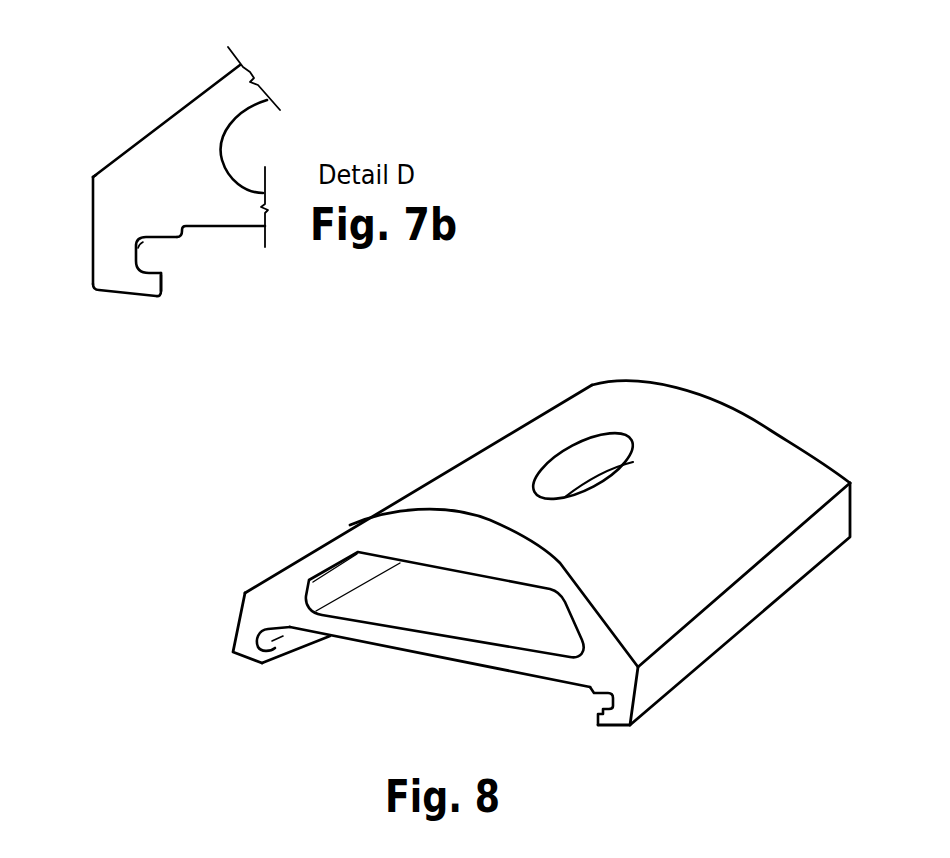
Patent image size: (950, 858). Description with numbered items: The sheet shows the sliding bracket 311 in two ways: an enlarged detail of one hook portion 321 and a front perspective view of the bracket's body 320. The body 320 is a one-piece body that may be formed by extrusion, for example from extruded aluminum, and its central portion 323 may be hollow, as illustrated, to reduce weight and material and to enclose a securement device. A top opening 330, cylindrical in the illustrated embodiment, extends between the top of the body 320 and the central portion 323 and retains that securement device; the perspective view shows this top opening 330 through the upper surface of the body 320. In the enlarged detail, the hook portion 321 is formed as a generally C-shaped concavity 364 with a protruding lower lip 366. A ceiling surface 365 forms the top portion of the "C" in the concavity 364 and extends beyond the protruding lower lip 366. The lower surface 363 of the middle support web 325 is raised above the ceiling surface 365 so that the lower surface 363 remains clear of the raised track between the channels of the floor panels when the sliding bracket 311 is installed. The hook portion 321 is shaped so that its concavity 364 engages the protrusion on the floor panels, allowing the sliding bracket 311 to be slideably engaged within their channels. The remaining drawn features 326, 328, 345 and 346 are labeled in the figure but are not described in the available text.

In FIG. 8, the sliding bracket 311 is at (797, 340).
In FIG. 7B, the one-piece body 320 is at (195, 97).
In FIG. 7B, the hook portion 321 is at (160, 308).
In FIG. 8, the hook portion 321 is at (273, 633).
In FIG. 8, the central portion 323 is at (470, 614).
In FIG. 7B, the middle support web 325 is at (240, 193).
In FIG. 7B, the bottom surface 326 is at (127, 298).
In FIG. 7B, the side wall 328 is at (92, 192).
In FIG. 8, the top opening 330 is at (553, 458).
In FIG. 8, the front flange 345 is at (277, 597).
In FIG. 8, the rounded edge 346 is at (803, 437).
In FIG. 7B, the lower surface 363 is at (217, 228).
In FIG. 7B, the C-shaped concavity 364 is at (138, 248).
In FIG. 7B, the ceiling surface 365 is at (165, 237).
In FIG. 7B, the protruding lower lip 366 is at (163, 282).